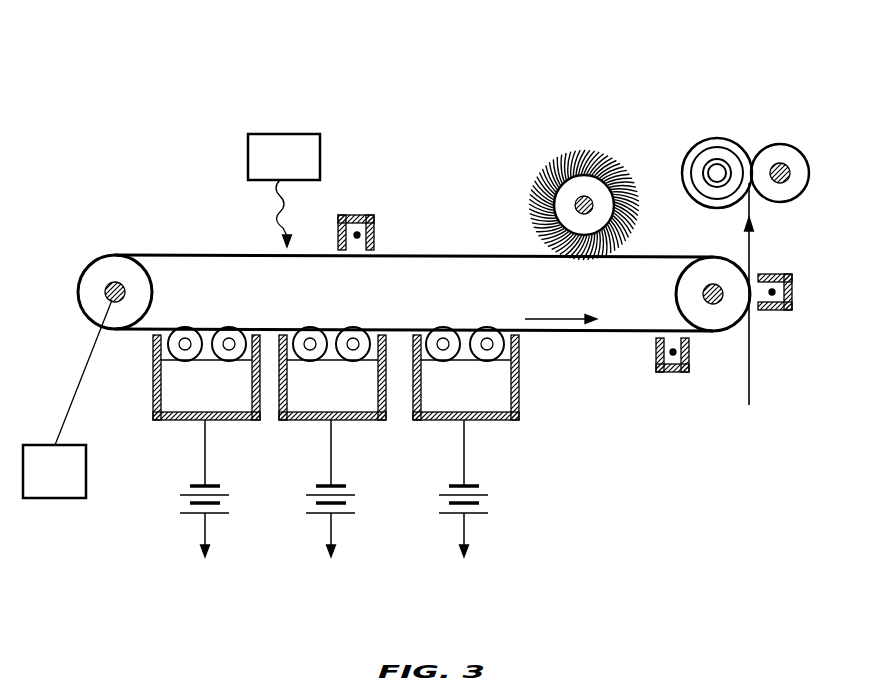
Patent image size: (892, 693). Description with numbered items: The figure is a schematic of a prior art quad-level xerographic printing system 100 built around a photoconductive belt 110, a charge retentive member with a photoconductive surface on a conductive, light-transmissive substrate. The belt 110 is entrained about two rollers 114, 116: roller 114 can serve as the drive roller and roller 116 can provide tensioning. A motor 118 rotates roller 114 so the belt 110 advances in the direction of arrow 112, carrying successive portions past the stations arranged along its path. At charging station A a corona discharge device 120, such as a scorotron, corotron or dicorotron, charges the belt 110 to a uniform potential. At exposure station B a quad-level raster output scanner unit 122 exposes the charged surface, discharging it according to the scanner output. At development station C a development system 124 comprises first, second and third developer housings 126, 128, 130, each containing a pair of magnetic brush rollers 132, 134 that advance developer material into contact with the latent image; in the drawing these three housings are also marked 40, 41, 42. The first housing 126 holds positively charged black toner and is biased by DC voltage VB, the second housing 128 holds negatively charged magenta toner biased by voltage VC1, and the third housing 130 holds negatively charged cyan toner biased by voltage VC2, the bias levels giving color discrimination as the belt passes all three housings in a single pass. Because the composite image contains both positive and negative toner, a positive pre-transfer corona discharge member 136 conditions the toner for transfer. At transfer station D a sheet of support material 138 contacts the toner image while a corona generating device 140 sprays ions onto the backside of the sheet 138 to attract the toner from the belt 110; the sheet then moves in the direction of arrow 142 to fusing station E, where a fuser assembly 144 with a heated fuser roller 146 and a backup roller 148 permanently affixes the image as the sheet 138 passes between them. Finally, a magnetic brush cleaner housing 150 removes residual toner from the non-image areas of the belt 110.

The quad-level xerographic printing system 100 is at (120, 118).
The photoconductive belt 110 is at (220, 242).
The arrow 112 is at (567, 322).
The roller 114 is at (104, 272).
The roller 116 is at (708, 278).
The motor 118 is at (82, 448).
The corona discharge device 120 is at (373, 217).
The quad-level raster output scanner (ROS) unit 122 is at (313, 145).
The development system 124 is at (172, 585).
The first developer housing 126 is at (187, 422).
The second developer housing 128 is at (312, 422).
The third developer housing 130 is at (445, 422).
The magnetic brush roller 132 is at (185, 337).
The magnetic brush roller 134 is at (229, 337).
The pre-transfer corona discharge member 136 is at (675, 373).
The sheet of support material 138 is at (750, 383).
The corona generating device 140 is at (788, 312).
The arrow 142 is at (757, 235).
The fuser assembly 144 is at (703, 92).
The heated fuser roller 146 is at (728, 143).
The backup roller 148 is at (793, 153).
The magnetic brush cleaner housing 150 is at (563, 158).
The developer housing 40 is at (207, 402).
The developer housing 41 is at (348, 412).
The developer housing 42 is at (492, 408).
The charging station A is at (370, 200).
The exposure station B is at (240, 137).
The development station C is at (238, 593).
The transfer station D is at (797, 296).
The fusing station E is at (701, 123).
The DC bias voltage VB is at (190, 514).
The DC bias voltage VC1 is at (320, 513).
The DC bias voltage VC2 is at (453, 517).